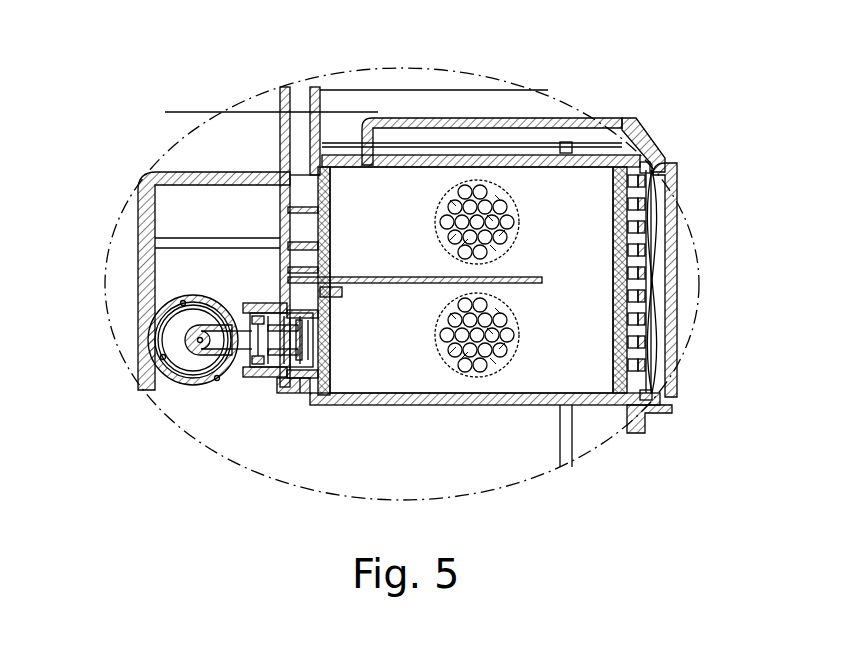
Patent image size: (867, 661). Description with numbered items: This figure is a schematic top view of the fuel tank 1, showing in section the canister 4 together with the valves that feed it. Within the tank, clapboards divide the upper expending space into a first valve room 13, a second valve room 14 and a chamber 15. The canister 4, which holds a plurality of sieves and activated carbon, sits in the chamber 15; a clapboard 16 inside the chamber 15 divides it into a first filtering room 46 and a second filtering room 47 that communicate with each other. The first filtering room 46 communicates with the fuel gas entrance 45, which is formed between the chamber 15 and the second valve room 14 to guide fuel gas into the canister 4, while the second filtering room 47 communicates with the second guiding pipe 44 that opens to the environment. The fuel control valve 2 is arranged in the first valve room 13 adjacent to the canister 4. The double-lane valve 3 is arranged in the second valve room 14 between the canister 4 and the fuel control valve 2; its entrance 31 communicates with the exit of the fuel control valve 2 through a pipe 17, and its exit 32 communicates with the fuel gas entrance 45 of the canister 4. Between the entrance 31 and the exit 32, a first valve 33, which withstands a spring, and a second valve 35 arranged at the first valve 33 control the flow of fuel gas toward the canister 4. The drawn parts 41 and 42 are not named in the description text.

The fuel tank 1 is at (700, 282).
The fuel control valve 2 is at (195, 390).
The double-lane valve 3 is at (258, 382).
The canister 4 is at (478, 410).
The first valve room 13 is at (173, 340).
The second valve room 14 is at (282, 382).
The chamber 15 is at (562, 168).
The clapboard 16 is at (376, 278).
The pipe 17 is at (205, 325).
The entrance 31 is at (222, 380).
The exit 32 is at (297, 385).
The first valve 33 is at (267, 313).
The second valve 35 is at (248, 308).
The outlet filter support 41 is at (615, 360).
The granular filter material 42 is at (458, 378).
The second guiding pipe 44 is at (280, 125).
The fuel gas entrance 45 is at (340, 350).
The first filtering room 46 is at (406, 360).
The second filtering room 47 is at (404, 190).